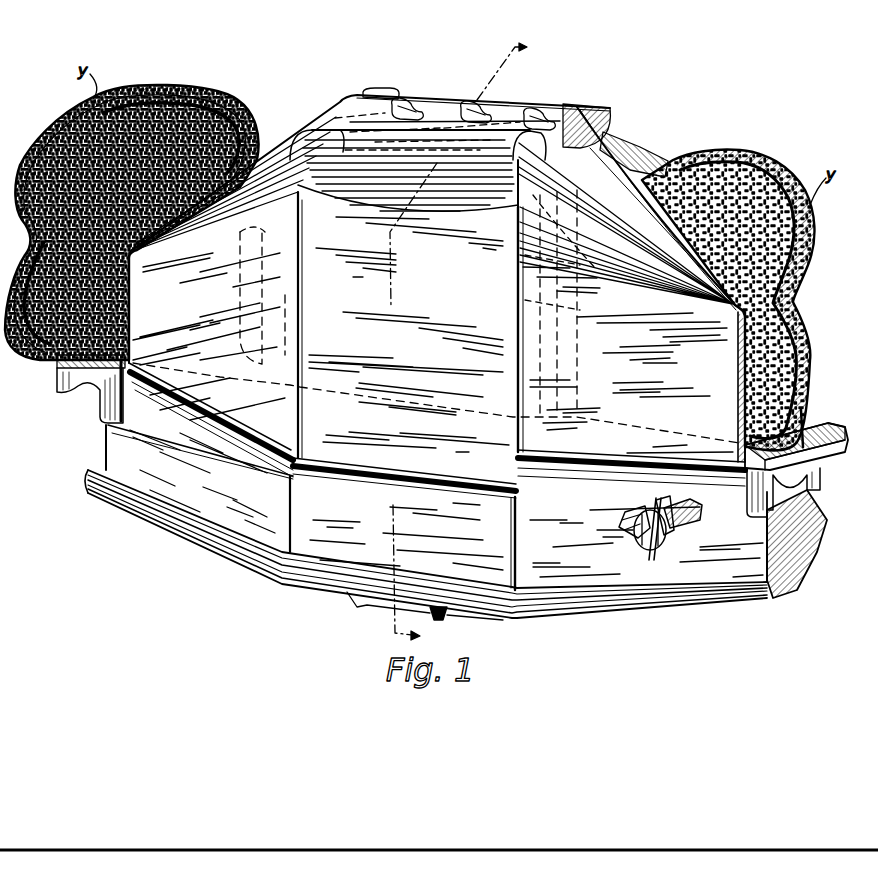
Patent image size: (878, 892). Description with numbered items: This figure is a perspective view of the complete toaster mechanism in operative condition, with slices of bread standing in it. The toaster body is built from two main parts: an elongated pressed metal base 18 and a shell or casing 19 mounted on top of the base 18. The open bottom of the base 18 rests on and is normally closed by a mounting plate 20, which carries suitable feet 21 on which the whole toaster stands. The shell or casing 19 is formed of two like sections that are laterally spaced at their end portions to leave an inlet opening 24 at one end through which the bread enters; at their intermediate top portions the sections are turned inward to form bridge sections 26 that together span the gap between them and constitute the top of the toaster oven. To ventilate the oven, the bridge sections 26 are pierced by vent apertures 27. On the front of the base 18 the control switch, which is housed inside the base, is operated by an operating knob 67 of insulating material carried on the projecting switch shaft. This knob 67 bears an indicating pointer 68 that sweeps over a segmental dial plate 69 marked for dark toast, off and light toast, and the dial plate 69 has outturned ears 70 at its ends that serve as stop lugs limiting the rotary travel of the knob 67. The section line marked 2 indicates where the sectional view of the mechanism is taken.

The section line 2- 2 is at (446, 341).
The base 18 is at (190, 480).
The shell or casing 19 is at (340, 277).
The mounting plate 20 is at (223, 545).
The feet 21 is at (358, 608).
The inlet opening 24 is at (643, 146).
The bridge sections 26 is at (573, 133).
The vent apertures 27 is at (539, 116).
The operating knob 67 is at (658, 552).
The indicating pointer 68 is at (650, 500).
The segmental dial plate 69 is at (673, 503).
The outturned ears 70 is at (633, 537).